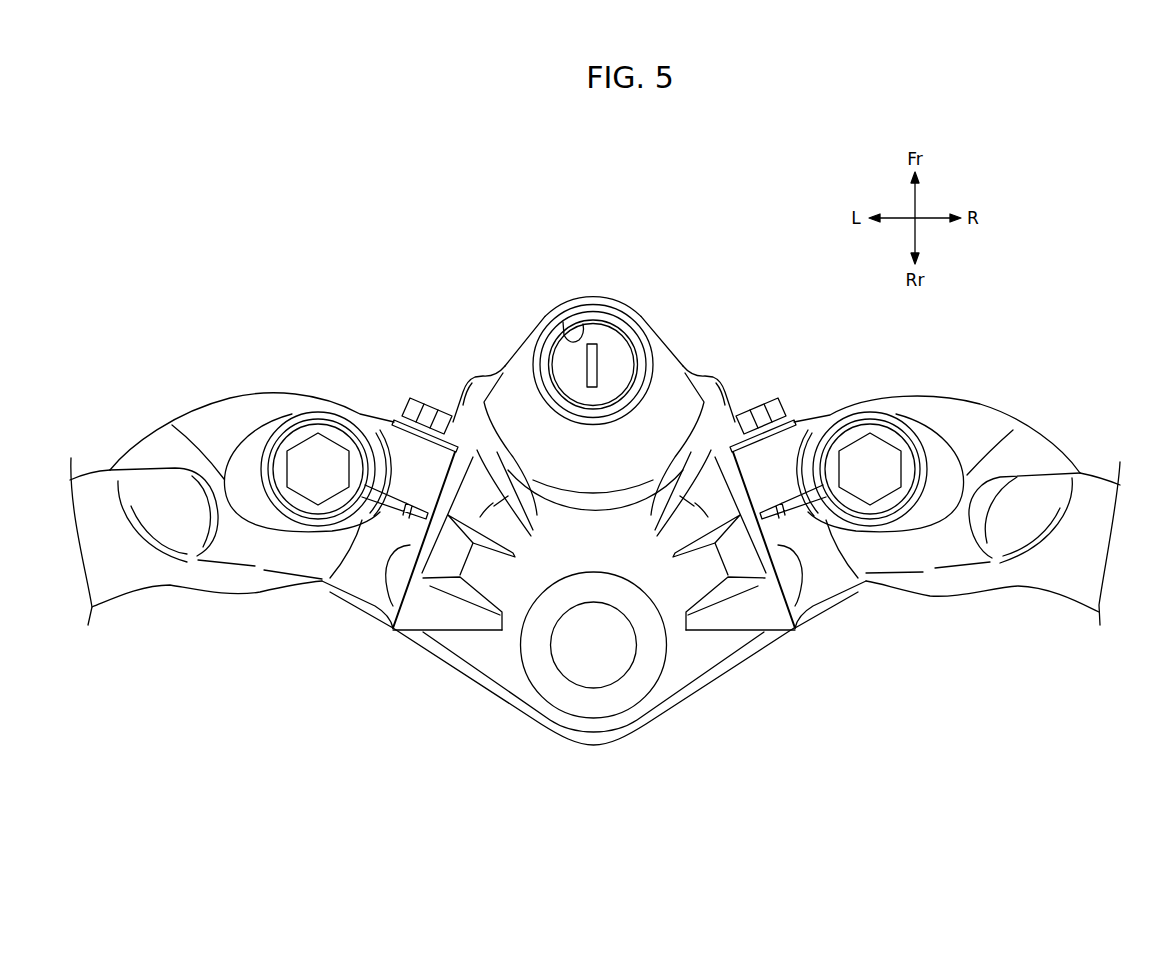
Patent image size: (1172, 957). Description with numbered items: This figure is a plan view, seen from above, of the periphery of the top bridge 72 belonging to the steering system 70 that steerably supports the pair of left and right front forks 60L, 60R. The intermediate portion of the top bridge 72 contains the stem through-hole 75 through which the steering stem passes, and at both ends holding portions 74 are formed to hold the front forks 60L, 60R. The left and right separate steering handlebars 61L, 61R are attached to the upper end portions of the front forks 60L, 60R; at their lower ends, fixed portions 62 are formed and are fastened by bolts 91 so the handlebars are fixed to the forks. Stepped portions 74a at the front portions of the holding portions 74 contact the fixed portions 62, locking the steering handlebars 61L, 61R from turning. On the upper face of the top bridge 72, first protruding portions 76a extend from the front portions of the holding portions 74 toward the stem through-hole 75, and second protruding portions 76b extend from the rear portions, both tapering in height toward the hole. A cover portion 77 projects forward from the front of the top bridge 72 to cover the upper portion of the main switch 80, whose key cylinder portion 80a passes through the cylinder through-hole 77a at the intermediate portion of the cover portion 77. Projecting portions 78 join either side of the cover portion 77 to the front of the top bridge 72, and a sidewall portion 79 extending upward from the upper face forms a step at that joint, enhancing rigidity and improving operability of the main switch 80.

The steering system 70 is at (602, 280).
The top bridge 72 is at (683, 657).
The holding portions 74 is at (361, 616).
The stepped portions 74a is at (397, 630).
The stem through-hole 75 is at (620, 625).
The first protruding portions 76a is at (498, 405).
The second protruding portions 76b is at (463, 613).
The cover portion 77 is at (665, 378).
The cylinder through-hole 77a is at (564, 335).
The projecting portions 78 is at (478, 398).
The sidewall portion 79 is at (593, 500).
The main switch 80 is at (593, 365).
The key cylinder portion 80a is at (617, 348).
The bolts 91 is at (435, 417).
The fixed portions 62 is at (408, 453).
The left front fork 60L is at (319, 467).
The right front fork 60R is at (880, 436).
The left steering handlebar 61L is at (178, 507).
The right steering handlebar 61R is at (1012, 510).